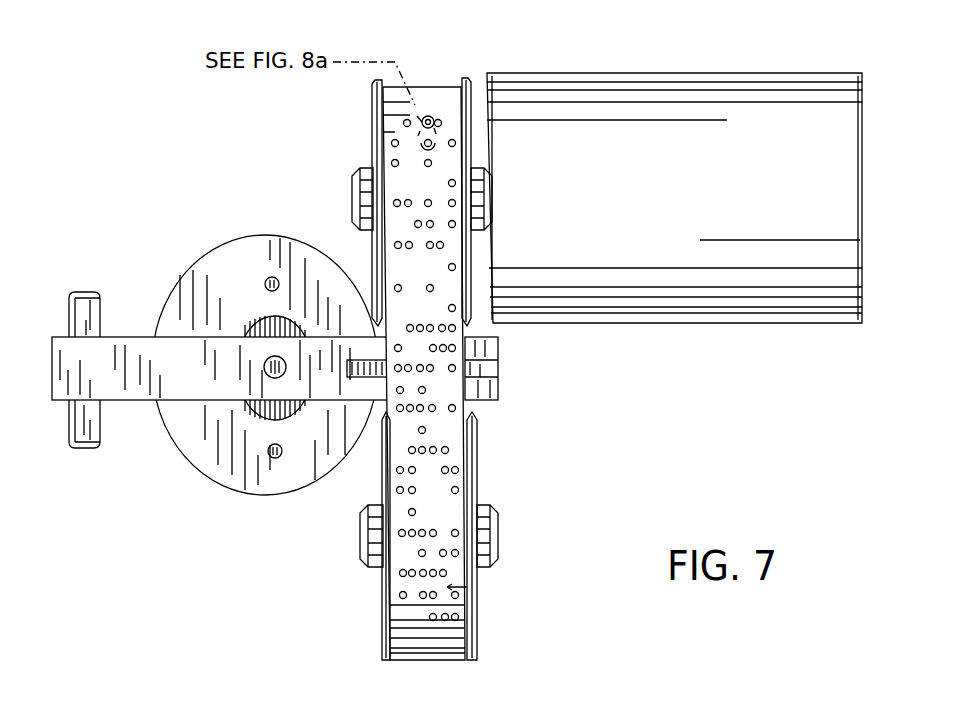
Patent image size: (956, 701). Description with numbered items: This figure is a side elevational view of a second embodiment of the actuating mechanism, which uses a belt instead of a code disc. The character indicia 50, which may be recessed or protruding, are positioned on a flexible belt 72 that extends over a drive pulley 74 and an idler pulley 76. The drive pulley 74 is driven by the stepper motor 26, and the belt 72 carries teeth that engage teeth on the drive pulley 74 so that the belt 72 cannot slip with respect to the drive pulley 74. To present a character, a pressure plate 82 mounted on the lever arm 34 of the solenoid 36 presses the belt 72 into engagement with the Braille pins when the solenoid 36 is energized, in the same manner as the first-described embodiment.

The stepper motor 26 is at (838, 211).
The actuator arm 34 is at (258, 357).
The solenoid 36 is at (190, 433).
The character indicia 50 is at (443, 103).
The flexible belt 72 is at (434, 627).
The drive pulley 74 is at (380, 262).
The idler pulley 76 is at (383, 603).
The pressure plate 82 is at (346, 442).